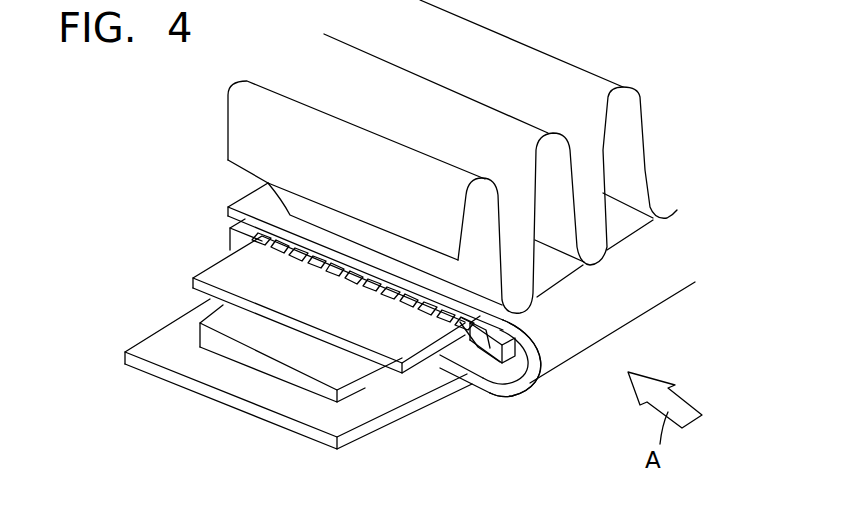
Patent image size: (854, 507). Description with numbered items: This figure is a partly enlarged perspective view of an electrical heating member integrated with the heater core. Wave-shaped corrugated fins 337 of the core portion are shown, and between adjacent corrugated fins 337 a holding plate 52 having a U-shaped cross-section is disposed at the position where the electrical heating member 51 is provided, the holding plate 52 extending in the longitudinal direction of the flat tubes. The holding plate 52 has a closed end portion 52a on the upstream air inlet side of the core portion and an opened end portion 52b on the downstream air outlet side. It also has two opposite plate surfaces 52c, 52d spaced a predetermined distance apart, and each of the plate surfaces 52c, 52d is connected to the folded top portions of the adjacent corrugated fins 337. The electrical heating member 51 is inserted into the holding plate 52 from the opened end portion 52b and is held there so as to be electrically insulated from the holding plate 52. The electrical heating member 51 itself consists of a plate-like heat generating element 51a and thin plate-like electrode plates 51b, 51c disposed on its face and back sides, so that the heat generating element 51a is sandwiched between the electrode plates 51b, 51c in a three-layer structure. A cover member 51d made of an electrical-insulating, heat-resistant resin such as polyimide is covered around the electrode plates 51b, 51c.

The corrugated fin 337 is at (643, 150).
The holding plate 52 is at (657, 316).
The closed end portion 52a is at (543, 373).
The opened end portion 52b is at (228, 208).
The plate surface 52c is at (320, 247).
The electrical heating member 51 is at (396, 429).
The heat generating element 51a is at (228, 320).
The electrode plate 51b is at (237, 267).
The electrode plate 51c is at (197, 362).
The cover member 51d is at (493, 386).
The plate surface 52d is at (468, 377).